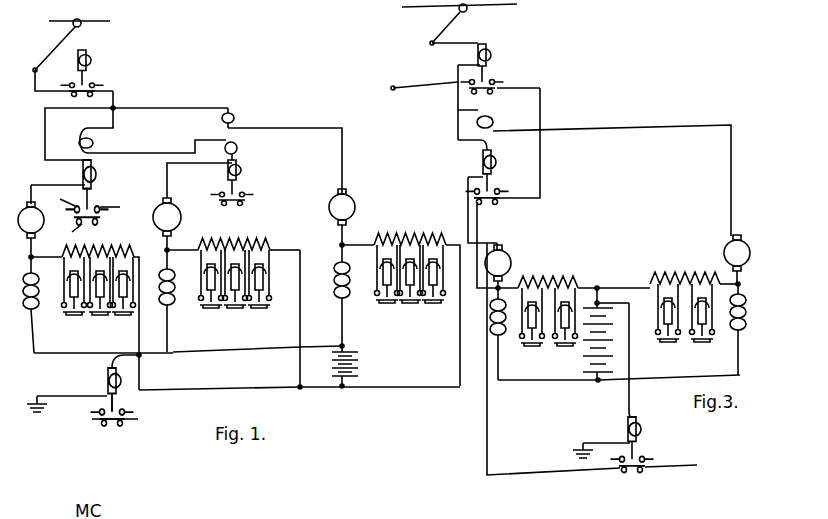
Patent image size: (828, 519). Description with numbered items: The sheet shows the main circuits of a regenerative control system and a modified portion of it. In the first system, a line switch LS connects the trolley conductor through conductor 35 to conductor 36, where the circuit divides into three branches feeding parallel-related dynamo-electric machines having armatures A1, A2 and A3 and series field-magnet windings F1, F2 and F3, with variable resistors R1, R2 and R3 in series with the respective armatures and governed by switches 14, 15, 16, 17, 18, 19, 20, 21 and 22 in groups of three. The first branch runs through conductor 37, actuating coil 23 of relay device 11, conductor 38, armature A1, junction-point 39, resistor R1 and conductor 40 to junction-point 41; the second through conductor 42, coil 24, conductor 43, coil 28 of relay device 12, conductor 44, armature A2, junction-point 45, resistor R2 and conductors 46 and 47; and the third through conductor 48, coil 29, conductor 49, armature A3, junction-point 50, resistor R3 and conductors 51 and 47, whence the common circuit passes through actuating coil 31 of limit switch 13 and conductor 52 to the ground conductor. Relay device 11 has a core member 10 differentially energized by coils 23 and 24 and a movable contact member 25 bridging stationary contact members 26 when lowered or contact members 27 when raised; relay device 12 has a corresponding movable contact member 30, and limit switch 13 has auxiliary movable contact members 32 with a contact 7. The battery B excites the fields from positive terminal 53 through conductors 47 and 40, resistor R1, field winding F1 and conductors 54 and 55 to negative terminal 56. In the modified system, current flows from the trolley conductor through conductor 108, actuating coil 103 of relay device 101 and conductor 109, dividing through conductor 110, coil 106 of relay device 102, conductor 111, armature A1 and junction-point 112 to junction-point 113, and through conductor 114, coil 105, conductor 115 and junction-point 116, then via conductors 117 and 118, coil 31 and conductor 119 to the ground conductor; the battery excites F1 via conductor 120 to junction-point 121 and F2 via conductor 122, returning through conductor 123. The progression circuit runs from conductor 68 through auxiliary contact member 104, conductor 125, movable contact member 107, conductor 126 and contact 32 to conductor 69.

In FIG. 1, the contact 7 is at (241, 217).
In FIG. 1, the core member 10 is at (86, 193).
In FIG. 1, the relay device 11 is at (109, 188).
In FIG. 1, the relay device 12 is at (238, 170).
In FIG. 1, the limit switch 13 is at (125, 404).
In FIG. 3, the limit switch 13 is at (656, 453).
In FIG. 1, the switch 14 is at (74, 297).
In FIG. 3, the switch 14 is at (532, 333).
In FIG. 1, the switch 15 is at (100, 297).
In FIG. 3, the switch 15 is at (565, 333).
In FIG. 1, the switch 16 is at (123, 297).
In FIG. 1, the switch 17 is at (211, 294).
In FIG. 3, the switch 17 is at (668, 330).
In FIG. 1, the switch 18 is at (235, 294).
In FIG. 3, the switch 18 is at (702, 330).
In FIG. 1, the switch 19 is at (259, 294).
In FIG. 1, the switch 20 is at (387, 291).
In FIG. 1, the switch 21 is at (410, 291).
In FIG. 1, the switch 22 is at (434, 291).
In FIG. 1, the actuating coil 23 is at (95, 165).
In FIG. 1, the actuating coil 24 is at (79, 143).
In FIG. 1, the movable contact member 25 is at (119, 216).
In FIG. 1, the stationary contact members 26 is at (70, 233).
In FIG. 1, the stationary contact members 27 is at (57, 203).
In FIG. 1, the actuating coil 28 is at (238, 148).
In FIG. 1, the actuating coil 29 is at (235, 118).
In FIG. 1, the movable contact member 30 is at (201, 231).
In FIG. 1, the actuating coil 31 is at (104, 373).
In FIG. 3, the actuating coil 31 is at (640, 422).
In FIG. 1, the movable contact members 32 is at (112, 432).
In FIG. 3, the movable contact members 32 is at (636, 478).
In FIG. 1, the conductor 35 is at (36, 78).
In FIG. 1, the conductor 36 is at (114, 99).
In FIG. 1, the conductor 37 is at (47, 103).
In FIG. 1, the conductor 38 is at (60, 178).
In FIG. 1, the junction-point 39 is at (29, 258).
In FIG. 1, the conductor 40 is at (141, 331).
In FIG. 1, the junction-point 41 is at (141, 357).
In FIG. 1, the conductor 42 is at (114, 124).
In FIG. 1, the conductor 43 is at (156, 141).
In FIG. 1, the conductor 44 is at (198, 160).
In FIG. 1, the junction-point 45 is at (166, 252).
In FIG. 1, the conductor 46 is at (299, 338).
In FIG. 1, the conductor 47 is at (283, 378).
In FIG. 1, the conductor 48 is at (217, 107).
In FIG. 1, the conductor 49 is at (328, 115).
In FIG. 1, the junction-point 50 is at (340, 245).
In FIG. 1, the conductor 51 is at (458, 357).
In FIG. 1, the conductor 52 is at (78, 396).
In FIG. 1, the positive terminal 53 is at (379, 396).
In FIG. 1, the conductor 54 is at (33, 343).
In FIG. 1, the conductor 55 is at (257, 360).
In FIG. 1, the negative battery terminal 56 is at (348, 348).
In FIG. 3, the conductor 68 is at (432, 78).
In FIG. 3, the conductor 69 is at (690, 475).
In FIG. 3, the relay device 101 is at (497, 69).
In FIG. 3, the relay device 102 is at (500, 177).
In FIG. 3, the actuating coil 103 is at (489, 52).
In FIG. 3, the auxiliary movable contact member 104 is at (490, 89).
In FIG. 3, the actuating coil 105 is at (494, 122).
In FIG. 3, the actuating coil 106 is at (483, 160).
In FIG. 3, the movable contact member 107 is at (492, 201).
In FIG. 3, the conductor 108 is at (466, 45).
In FIG. 3, the conductor 109 is at (455, 102).
In FIG. 3, the conductor 110 is at (457, 118).
In FIG. 3, the conductor 111 is at (467, 203).
In FIG. 3, the junction-point 112 is at (479, 258).
In FIG. 3, the junction-point 113 is at (622, 284).
In FIG. 3, the conductor 114 is at (478, 103).
In FIG. 3, the conductor 115 is at (636, 122).
In FIG. 3, the junction-point 116 is at (741, 280).
In FIG. 3, the conductor 117 is at (600, 297).
In FIG. 3, the conductor 118 is at (631, 345).
In FIG. 3, the conductor 119 is at (606, 433).
In FIG. 3, the conductor 120 is at (565, 388).
In FIG. 3, the junction-point 121 is at (606, 383).
In FIG. 3, the conductor 122 is at (741, 353).
In FIG. 3, the conductor 123 is at (599, 368).
In FIG. 3, the conductor 125 is at (541, 108).
In FIG. 3, the conductor 126 is at (486, 437).
In FIG. 1, the armature A1 is at (31, 211).
In FIG. 3, the armature A1 is at (505, 258).
In FIG. 1, the armature A2 is at (167, 217).
In FIG. 3, the armature A2 is at (737, 253).
In FIG. 1, the armature A3 is at (342, 207).
In FIG. 1, the field-magnet winding F1 is at (23, 297).
In FIG. 3, the field-magnet winding F1 is at (490, 338).
In FIG. 1, the field-magnet winding F2 is at (159, 297).
In FIG. 3, the field-magnet winding F2 is at (748, 314).
In FIG. 1, the field-magnet winding F3 is at (334, 288).
In FIG. 1, the variable resistor R1 is at (98, 242).
In FIG. 3, the variable resistor R1 is at (556, 276).
In FIG. 1, the variable resistor R2 is at (249, 235).
In FIG. 3, the variable resistor R2 is at (690, 280).
In FIG. 1, the variable resistor R3 is at (418, 228).
In FIG. 1, the battery B is at (360, 375).
In FIG. 3, the battery B is at (596, 341).
In FIG. 1, the line switch LS is at (82, 80).